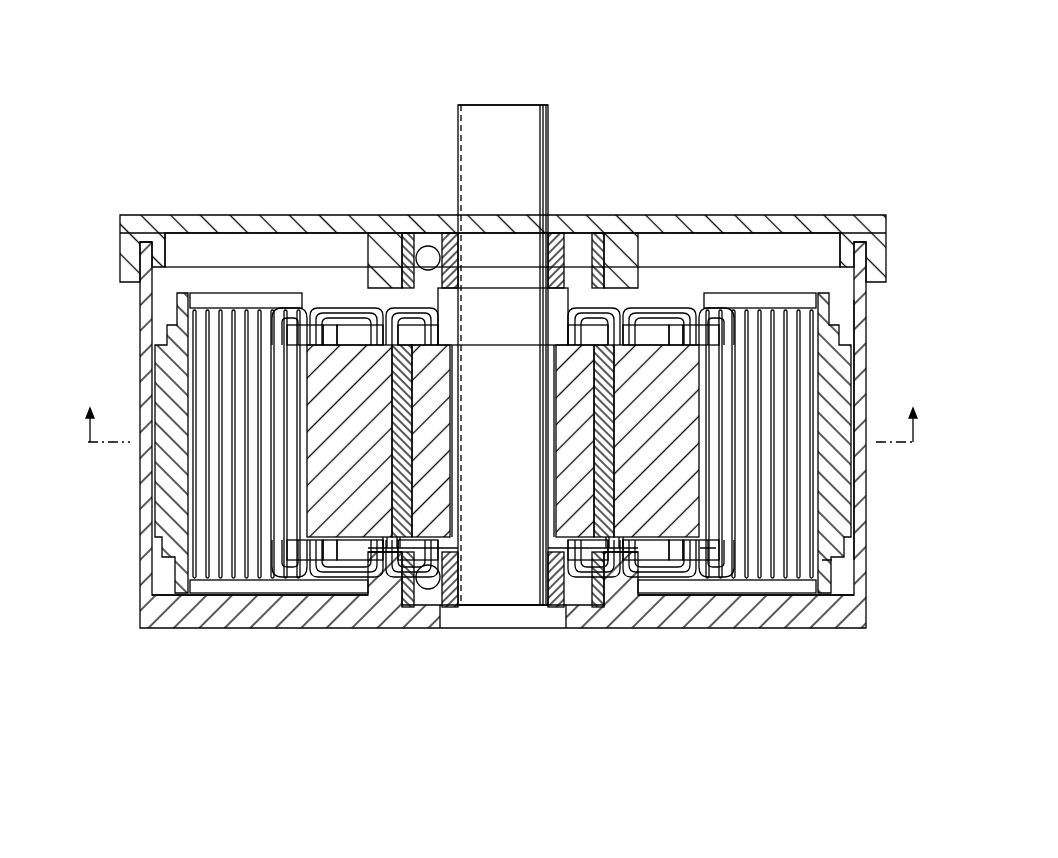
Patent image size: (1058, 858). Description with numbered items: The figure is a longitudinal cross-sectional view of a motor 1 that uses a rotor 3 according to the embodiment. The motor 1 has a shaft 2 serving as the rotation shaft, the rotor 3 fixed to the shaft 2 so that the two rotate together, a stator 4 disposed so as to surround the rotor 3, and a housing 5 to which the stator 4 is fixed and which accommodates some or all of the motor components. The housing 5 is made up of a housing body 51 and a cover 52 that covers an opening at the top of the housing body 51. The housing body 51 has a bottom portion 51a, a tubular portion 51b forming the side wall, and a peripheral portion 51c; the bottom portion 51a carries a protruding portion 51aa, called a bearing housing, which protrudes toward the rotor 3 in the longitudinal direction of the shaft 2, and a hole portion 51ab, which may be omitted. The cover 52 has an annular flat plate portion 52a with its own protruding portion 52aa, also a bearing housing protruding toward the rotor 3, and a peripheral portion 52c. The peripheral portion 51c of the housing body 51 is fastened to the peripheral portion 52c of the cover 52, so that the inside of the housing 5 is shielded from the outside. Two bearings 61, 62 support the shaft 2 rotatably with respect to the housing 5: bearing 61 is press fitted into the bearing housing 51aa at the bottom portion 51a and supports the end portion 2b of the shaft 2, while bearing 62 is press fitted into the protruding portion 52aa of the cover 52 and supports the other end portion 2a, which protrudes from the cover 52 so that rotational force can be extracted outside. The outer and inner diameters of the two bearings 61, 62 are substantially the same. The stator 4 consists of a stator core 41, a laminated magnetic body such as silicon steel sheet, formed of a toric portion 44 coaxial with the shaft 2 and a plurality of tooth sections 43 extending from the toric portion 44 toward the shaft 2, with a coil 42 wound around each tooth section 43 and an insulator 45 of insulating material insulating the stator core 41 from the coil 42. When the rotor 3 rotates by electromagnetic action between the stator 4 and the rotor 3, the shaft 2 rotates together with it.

The motor 1 is at (740, 85).
The shaft 2 is at (517, 170).
The other end portion 2a is at (550, 130).
The one end portion 2b is at (474, 594).
The rotor 3 is at (666, 295).
The stator 4 is at (233, 706).
The housing 5 is at (820, 118).
The stator core 41 is at (273, 669).
The coil 42 is at (223, 467).
The tooth section 43 is at (285, 548).
The toric portion 44 is at (168, 522).
The insulator 45 is at (710, 547).
The housing body 51 is at (866, 300).
The bottom portion 51a is at (765, 628).
The protruding portion (bearing housing) 51aa is at (383, 582).
The hole portion 51ab is at (517, 617).
The tubular portion 51b is at (868, 350).
The peripheral portion 51c is at (118, 252).
The cover 52 is at (843, 215).
The annular flat plate portion 52a is at (247, 216).
The protruding portion (bearing housing) 52aa is at (382, 272).
The peripheral portion 52c is at (136, 215).
The bearing 61 is at (612, 598).
The bearing 62 is at (622, 225).